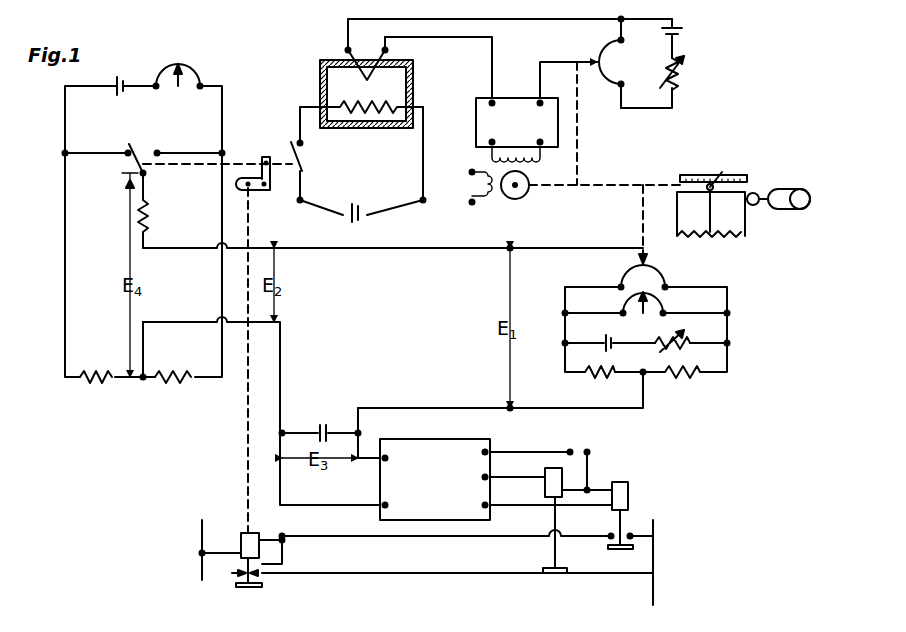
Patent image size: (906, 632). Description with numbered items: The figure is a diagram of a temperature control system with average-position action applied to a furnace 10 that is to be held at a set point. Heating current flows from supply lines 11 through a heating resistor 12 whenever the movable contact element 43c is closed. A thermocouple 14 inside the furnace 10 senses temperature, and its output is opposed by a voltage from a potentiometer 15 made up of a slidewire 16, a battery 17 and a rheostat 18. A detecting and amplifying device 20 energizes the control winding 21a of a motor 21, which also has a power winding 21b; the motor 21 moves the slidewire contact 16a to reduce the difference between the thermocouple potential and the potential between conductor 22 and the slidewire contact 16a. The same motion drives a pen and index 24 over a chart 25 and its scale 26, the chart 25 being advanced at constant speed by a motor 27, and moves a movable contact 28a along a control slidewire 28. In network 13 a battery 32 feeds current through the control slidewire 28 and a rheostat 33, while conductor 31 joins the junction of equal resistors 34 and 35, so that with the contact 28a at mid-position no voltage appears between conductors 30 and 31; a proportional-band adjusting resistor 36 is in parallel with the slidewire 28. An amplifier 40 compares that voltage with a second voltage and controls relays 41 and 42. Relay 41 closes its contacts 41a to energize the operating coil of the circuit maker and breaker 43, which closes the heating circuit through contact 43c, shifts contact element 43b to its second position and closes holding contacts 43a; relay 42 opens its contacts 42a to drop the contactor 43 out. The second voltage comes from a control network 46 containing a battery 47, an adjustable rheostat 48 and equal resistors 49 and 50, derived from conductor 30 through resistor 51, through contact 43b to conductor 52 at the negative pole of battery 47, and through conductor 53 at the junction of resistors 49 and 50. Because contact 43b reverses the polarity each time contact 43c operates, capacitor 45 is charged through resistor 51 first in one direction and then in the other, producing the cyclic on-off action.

The furnace 10 is at (338, 78).
The supply lines 11 is at (363, 164).
The heating resistor 12 is at (362, 112).
The network 13 is at (664, 331).
The thermocouple 14 is at (367, 80).
The potentiometer 15 is at (648, 108).
The slidewire 16 is at (606, 50).
The slidewire contact 16a is at (590, 62).
The battery 17 is at (686, 30).
The rheostat 18 is at (685, 72).
The detecting and amplifying device 20 is at (505, 125).
The motor 21 is at (520, 200).
The control winding 21a is at (538, 163).
The power winding 21b is at (474, 204).
The conductor 22 is at (548, 20).
The pen and index 24 is at (722, 176).
The chart 25 is at (735, 225).
The scale 26 is at (700, 175).
The motor 27 is at (785, 194).
The control slidewire 28 is at (666, 274).
The movable contact 28a is at (635, 252).
The conductor 30 is at (458, 252).
The conductor 31 is at (437, 405).
The battery 32 is at (612, 338).
The rheostat 33 is at (683, 340).
The resistor 34 is at (600, 376).
The resistor 35 is at (686, 378).
The proportional-band adjusting resistor 36 is at (666, 304).
The amplifier 40 is at (410, 483).
The relay 41 is at (632, 494).
The contacts 41a is at (628, 534).
The relay 42 is at (545, 484).
The contacts 42a is at (553, 580).
The circuit maker and breaker 43 is at (246, 545).
The holding contacts 43a is at (238, 586).
The contact element 43b is at (137, 150).
The movable contact element 43c is at (302, 156).
The capacitor 45 is at (322, 422).
The control network 46 is at (144, 233).
The battery 47 is at (120, 84).
The adjustable rheostat 48 is at (196, 72).
The resistor 49 is at (108, 382).
The resistor 50 is at (178, 382).
The resistor 51 is at (148, 220).
The conductor 52 is at (66, 216).
The conductor 53 is at (283, 345).